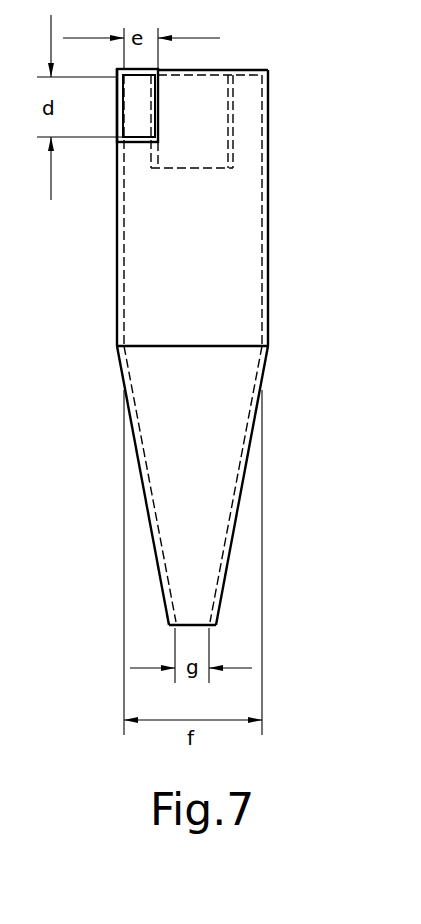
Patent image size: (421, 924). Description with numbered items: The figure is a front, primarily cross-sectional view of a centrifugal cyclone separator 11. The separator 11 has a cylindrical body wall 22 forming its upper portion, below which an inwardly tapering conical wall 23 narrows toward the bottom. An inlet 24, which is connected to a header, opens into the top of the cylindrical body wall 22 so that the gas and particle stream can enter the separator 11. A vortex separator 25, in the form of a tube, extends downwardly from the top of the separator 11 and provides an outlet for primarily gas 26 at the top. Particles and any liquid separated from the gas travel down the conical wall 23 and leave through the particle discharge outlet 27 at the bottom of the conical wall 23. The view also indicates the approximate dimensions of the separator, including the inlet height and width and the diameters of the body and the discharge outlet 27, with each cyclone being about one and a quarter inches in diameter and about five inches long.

The centrifugal separator 11 is at (209, 346).
The cylindrical body wall 22 is at (263, 203).
The conical wall 23 is at (241, 460).
The inlet 24 is at (126, 117).
The vortex separator 25 is at (232, 120).
The outlet for primarily gas 26 is at (207, 77).
The particle discharge outlet 27 is at (194, 618).